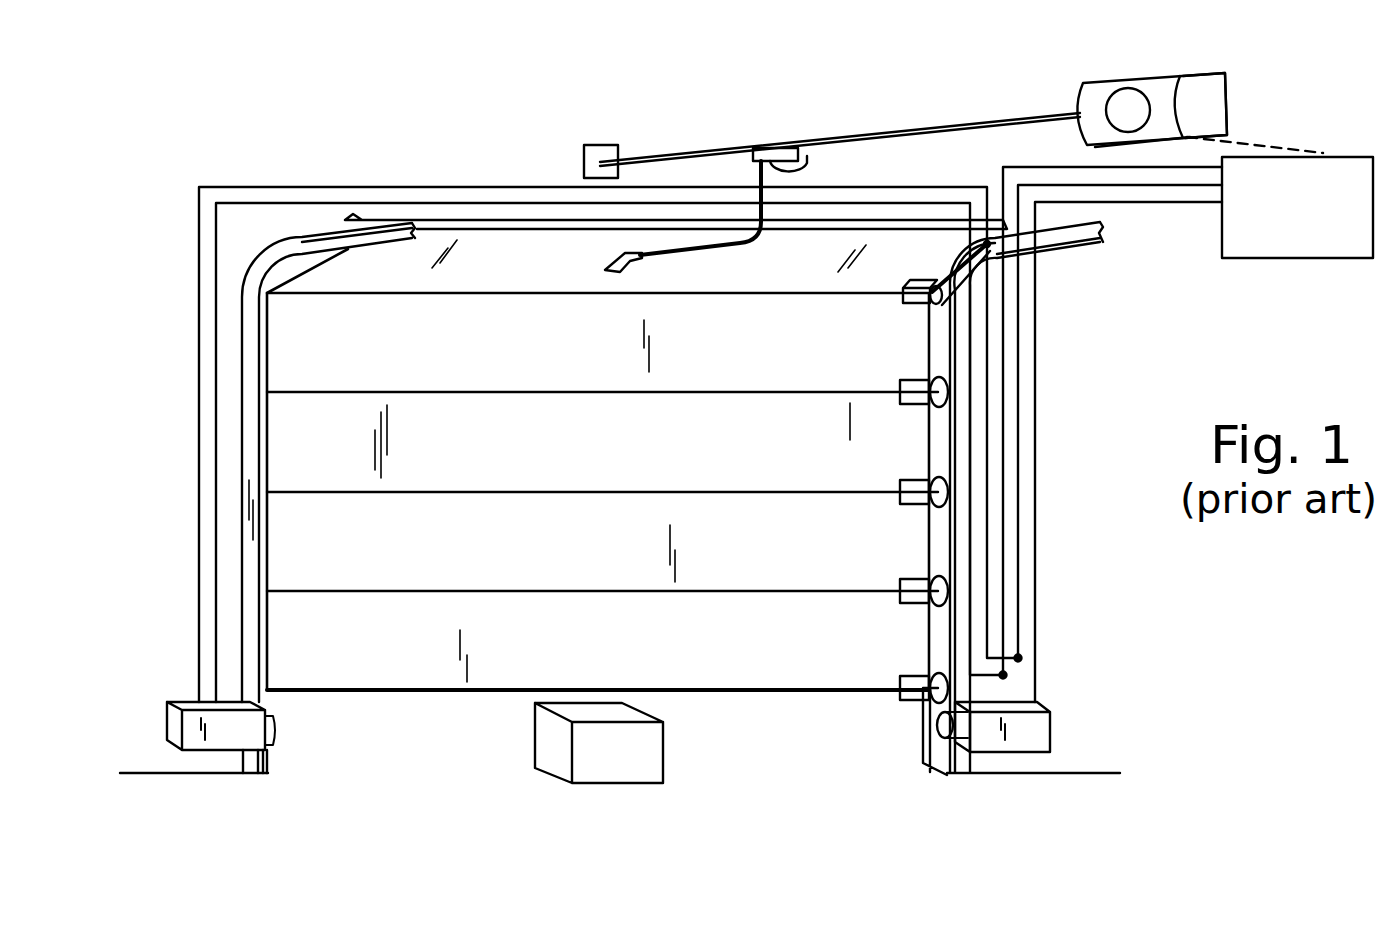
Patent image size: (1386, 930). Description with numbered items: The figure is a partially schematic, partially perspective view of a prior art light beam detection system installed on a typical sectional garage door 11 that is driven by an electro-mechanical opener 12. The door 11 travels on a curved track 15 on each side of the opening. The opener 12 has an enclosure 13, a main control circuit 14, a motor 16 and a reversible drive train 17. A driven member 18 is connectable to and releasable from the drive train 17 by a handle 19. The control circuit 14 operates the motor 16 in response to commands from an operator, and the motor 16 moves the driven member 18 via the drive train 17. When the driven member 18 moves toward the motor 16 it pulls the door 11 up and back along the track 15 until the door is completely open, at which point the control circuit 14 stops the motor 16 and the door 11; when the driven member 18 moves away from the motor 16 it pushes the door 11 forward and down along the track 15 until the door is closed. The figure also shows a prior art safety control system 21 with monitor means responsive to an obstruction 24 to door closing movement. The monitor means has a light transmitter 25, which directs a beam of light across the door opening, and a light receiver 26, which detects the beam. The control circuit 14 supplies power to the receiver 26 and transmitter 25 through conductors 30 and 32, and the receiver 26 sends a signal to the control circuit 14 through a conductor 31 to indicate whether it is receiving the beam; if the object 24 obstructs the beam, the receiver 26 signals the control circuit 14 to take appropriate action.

The sectional garage door 11 is at (615, 451).
The electro-mechanical opener 12 is at (1200, 86).
The enclosure 13 is at (1215, 105).
The main control circuit 14 is at (1285, 258).
The curved track 15 is at (348, 250).
The motor 16 is at (1120, 89).
The reversible drive train 17 is at (857, 134).
The driven member 18 is at (775, 148).
The handle 19 is at (806, 166).
The safety control system 21 is at (1172, 581).
The obstruction 24 is at (672, 768).
The light transmitter 25 is at (213, 750).
The light receiver 26 is at (1023, 752).
The conductor 30 is at (213, 494).
The conductor 31 is at (1190, 202).
The conductor 32 is at (199, 527).